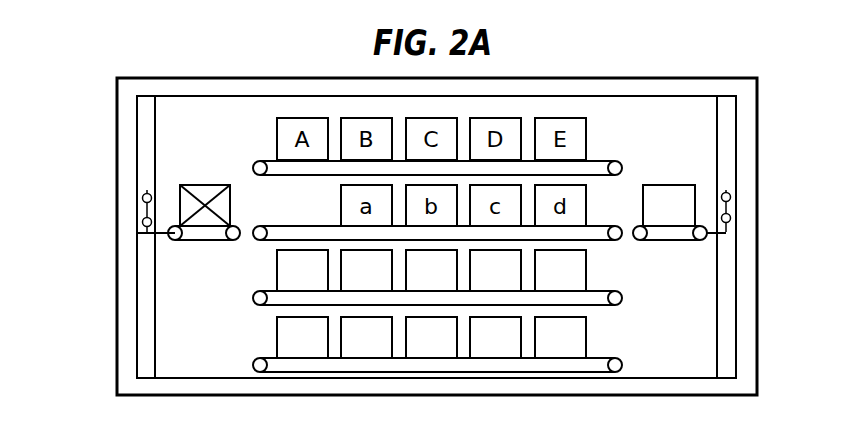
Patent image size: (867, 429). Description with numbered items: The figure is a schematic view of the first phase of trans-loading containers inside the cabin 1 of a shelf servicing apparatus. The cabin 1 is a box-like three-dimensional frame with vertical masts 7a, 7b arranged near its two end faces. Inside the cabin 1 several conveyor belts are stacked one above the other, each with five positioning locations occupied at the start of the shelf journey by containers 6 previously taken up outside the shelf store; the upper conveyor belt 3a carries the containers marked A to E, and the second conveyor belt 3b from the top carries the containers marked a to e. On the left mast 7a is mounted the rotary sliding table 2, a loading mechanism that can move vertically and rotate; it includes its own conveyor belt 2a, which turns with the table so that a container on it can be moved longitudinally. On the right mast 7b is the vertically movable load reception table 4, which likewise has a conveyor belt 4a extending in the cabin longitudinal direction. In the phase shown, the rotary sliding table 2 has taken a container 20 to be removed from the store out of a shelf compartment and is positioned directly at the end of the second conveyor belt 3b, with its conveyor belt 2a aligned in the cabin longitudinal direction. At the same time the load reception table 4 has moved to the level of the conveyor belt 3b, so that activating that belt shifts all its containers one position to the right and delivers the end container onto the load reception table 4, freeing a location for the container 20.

The cabin 1 is at (72, 253).
The rotary sliding table 2 is at (147, 258).
The conveyor belt 2a is at (173, 241).
The upper conveyor belt 3a is at (622, 167).
The second conveyor belt 3b is at (256, 240).
The load reception table 4 is at (721, 224).
The conveyor belt 4a is at (703, 226).
The container 6 is at (367, 337).
The mast 7a is at (147, 165).
The mast 7b is at (723, 318).
The container to be removed from the store 20 is at (206, 192).